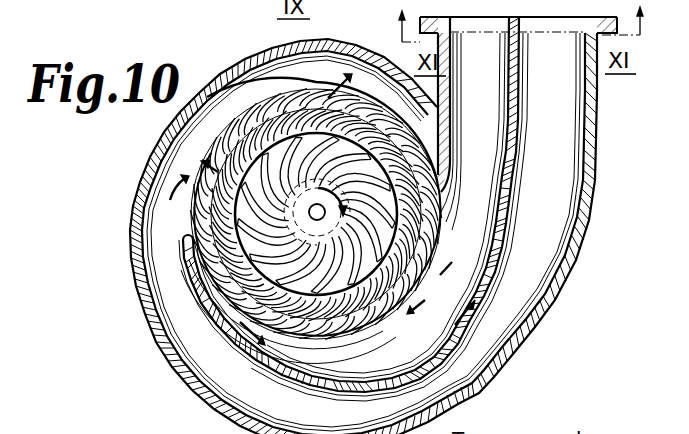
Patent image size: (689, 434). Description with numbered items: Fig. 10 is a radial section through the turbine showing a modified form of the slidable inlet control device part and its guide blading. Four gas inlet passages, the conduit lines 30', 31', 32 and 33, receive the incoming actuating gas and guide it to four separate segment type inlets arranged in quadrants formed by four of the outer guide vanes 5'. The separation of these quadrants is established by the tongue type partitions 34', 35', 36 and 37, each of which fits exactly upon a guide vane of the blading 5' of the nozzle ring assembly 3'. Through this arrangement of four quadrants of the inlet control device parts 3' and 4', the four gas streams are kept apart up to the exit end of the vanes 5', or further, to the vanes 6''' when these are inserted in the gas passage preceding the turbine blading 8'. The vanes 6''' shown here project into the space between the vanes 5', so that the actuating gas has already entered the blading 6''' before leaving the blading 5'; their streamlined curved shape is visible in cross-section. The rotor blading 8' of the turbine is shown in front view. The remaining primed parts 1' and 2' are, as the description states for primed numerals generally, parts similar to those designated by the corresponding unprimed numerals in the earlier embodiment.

The impeller 1' is at (316, 214).
The casing 2' is at (371, 225).
The nozzle ring assembly 3' is at (340, 214).
The inlet control device part 4' is at (298, 214).
The outer guide vanes 5' is at (314, 214).
The guide vanes 6''' is at (330, 214).
The rotor blading 8' is at (314, 212).
The gas inlet passage 30' is at (363, 232).
The gas inlet passage 31' is at (465, 131).
The gas inlet passage 32 is at (401, 104).
The gas inlet passage 33 is at (552, 97).
The tongue type partition 34' is at (340, 206).
The tongue type partition 35' is at (342, 244).
The tongue type partition 36 is at (352, 342).
The tongue type partition 37 is at (213, 95).